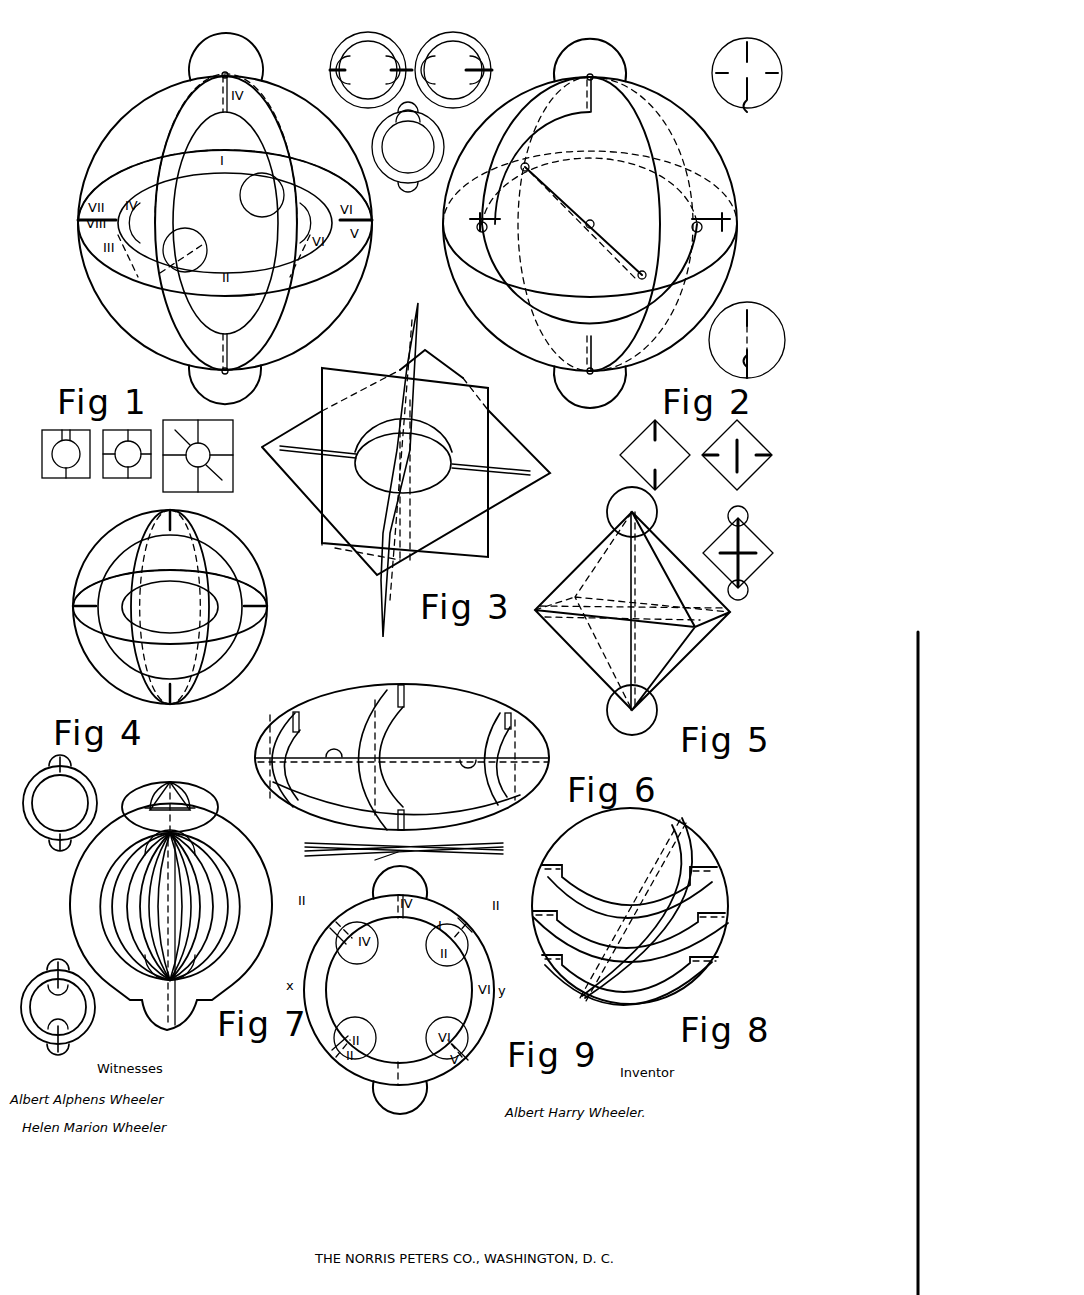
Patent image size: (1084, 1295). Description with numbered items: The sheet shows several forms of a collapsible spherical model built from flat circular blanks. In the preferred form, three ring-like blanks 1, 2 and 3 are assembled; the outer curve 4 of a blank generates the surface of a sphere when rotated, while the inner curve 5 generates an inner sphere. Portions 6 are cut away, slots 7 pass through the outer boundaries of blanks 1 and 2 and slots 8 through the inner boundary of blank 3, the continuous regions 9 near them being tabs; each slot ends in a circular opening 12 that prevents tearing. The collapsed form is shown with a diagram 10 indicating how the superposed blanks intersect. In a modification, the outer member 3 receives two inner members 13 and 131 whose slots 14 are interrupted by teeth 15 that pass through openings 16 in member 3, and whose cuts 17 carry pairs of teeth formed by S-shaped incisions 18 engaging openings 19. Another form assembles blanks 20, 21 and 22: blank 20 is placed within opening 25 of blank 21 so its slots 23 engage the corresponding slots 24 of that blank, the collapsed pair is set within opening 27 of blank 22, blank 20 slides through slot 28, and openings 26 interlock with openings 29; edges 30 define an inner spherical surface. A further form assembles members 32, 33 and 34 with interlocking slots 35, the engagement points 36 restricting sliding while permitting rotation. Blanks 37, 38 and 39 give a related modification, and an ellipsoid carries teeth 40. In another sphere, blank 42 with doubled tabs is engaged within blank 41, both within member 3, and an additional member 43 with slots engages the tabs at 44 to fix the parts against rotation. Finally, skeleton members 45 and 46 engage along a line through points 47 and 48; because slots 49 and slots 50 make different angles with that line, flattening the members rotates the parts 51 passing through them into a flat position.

In FIG. 1, the blank 1 is at (168, 210).
In FIG. 9, the blank 1 is at (486, 942).
In FIG. 1, the blank 2 is at (240, 282).
In FIG. 9, the blank 2 is at (488, 957).
In FIG. 1, the blank 3 is at (118, 295).
In FIG. 2, the blank 3 is at (700, 156).
In FIG. 7, the blank 3 is at (180, 976).
In FIG. 9, the blank 3 is at (490, 978).
In FIG. 1, the outer curve 4 is at (120, 124).
In FIG. 1, the inner curve 5 is at (130, 160).
In FIG. 1, the cut-away portion 6 is at (415, 109).
In FIG. 9, the cut-away portion 6 is at (449, 985).
In FIG. 1, the slot 7 is at (96, 222).
In FIG. 9, the slot 7 is at (399, 993).
In FIG. 1, the slot 8 is at (229, 223).
In FIG. 9, the slot 8 is at (400, 920).
In FIG. 1, the tab 9 is at (255, 58).
In FIG. 9, the tab 9 is at (414, 890).
In FIG. 9, the diagram 10 is at (328, 855).
In FIG. 1, the circular opening 12 is at (220, 73).
In FIG. 2, the circular opening 12 is at (712, 252).
In FIG. 2, the inner member 13 is at (650, 198).
In FIG. 2, the inner member 131 is at (470, 248).
In FIG. 2, the slot 14 is at (716, 70).
In FIG. 2, the tooth 15 is at (468, 229).
In FIG. 2, the opening 16 is at (470, 219).
In FIG. 2, the cut 17 is at (648, 290).
In FIG. 2, the S-shaped incision 18 is at (528, 174).
In FIG. 2, the opening 19 is at (532, 165).
In FIG. 3, the blank 20 is at (50, 472).
In FIG. 3, the blank 21 is at (382, 598).
In FIG. 3, the blank 22 is at (170, 480).
In FIG. 3, the slot 23 is at (408, 388).
In FIG. 3, the slot 24 is at (415, 402).
In FIG. 3, the opening 25 is at (104, 415).
In FIG. 3, the opening 26 is at (388, 524).
In FIG. 3, the opening 27 is at (205, 456).
In FIG. 3, the slot 28 is at (284, 456).
In FIG. 3, the opening 29 is at (408, 510).
In FIG. 3, the edge 30 is at (445, 436).
In FIG. 4, the member 32 is at (110, 620).
In FIG. 4, the member 33 is at (135, 650).
In FIG. 4, the member 34 is at (232, 654).
In FIG. 4, the slot 35 is at (70, 608).
In FIG. 4, the engagement point 36 is at (176, 530).
In FIG. 5, the blank 37 is at (640, 446).
In FIG. 5, the blank 38 is at (722, 446).
In FIG. 5, the blank 39 is at (722, 544).
In FIG. 6, the tooth 40 is at (338, 752).
In FIG. 7, the blank 41 is at (44, 838).
In FIG. 7, the blank 42 is at (128, 984).
In FIG. 7, the additional member 43 is at (205, 803).
In FIG. 7, the engagement of tabs 44 is at (172, 783).
In FIG. 8, the skeleton member 45 is at (694, 840).
In FIG. 8, the skeleton member 46 is at (686, 860).
In FIG. 8, the intersection point 47 is at (683, 820).
In FIG. 8, the intersection point 48 is at (582, 998).
In FIG. 8, the slot 49 is at (718, 866).
In FIG. 8, the slot 50 is at (690, 900).
In FIG. 8, the member 51 is at (602, 890).